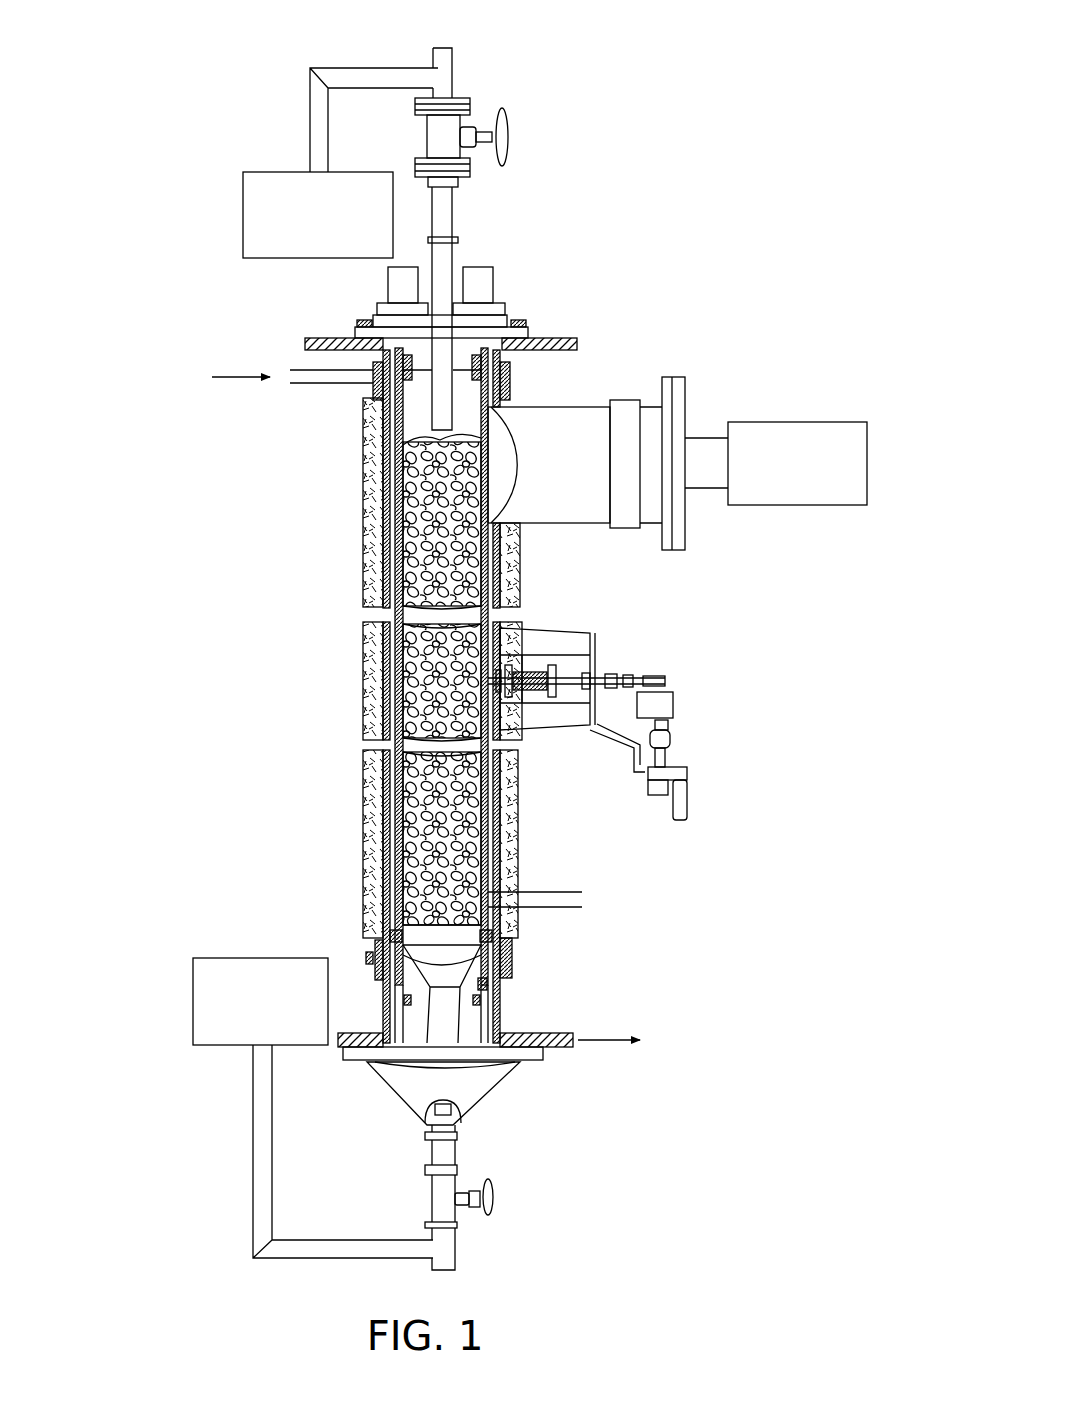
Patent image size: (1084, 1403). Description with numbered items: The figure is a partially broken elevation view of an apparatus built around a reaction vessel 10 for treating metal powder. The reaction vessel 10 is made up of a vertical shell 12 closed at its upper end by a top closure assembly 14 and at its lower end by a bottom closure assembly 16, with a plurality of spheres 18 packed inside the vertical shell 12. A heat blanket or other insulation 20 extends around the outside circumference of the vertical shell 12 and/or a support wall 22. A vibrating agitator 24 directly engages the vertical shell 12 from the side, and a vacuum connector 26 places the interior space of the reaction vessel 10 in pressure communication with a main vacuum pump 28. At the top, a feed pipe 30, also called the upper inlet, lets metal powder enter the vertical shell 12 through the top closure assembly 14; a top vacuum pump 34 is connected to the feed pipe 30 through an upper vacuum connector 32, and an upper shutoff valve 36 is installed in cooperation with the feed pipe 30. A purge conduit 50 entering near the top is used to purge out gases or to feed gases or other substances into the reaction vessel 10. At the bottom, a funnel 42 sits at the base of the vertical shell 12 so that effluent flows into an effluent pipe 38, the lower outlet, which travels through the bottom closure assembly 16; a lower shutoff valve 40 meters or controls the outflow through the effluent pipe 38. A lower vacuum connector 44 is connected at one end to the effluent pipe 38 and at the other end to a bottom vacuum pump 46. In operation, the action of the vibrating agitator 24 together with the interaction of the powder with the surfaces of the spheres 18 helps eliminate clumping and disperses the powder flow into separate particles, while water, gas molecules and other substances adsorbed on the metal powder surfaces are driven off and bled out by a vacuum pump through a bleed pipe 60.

The reaction vessel 10 is at (303, 472).
The vertical shell 12 is at (395, 582).
The top closure assembly 14 is at (513, 305).
The bottom closure assembly 16 is at (499, 1083).
The spheres 18 is at (518, 566).
The insulation 20 is at (365, 521).
The support wall 22 is at (500, 1003).
The vibrating agitator 24 is at (642, 678).
The vacuum connector 26 is at (548, 477).
The main vacuum pump 28 is at (795, 422).
The feed pipe 30 is at (448, 60).
The upper vacuum connector 32 is at (392, 80).
The top vacuum pump 34 is at (243, 214).
The upper shutoff valve 36 is at (430, 131).
The effluent pipe 38 is at (448, 1152).
The lower shutoff valve 40 is at (440, 1203).
The funnel 42 is at (470, 955).
The lower vacuum connector 44 is at (253, 1172).
The bottom vacuum pump 46 is at (193, 1004).
The purge conduit 50 is at (310, 386).
The bleed pipe 60 is at (578, 910).